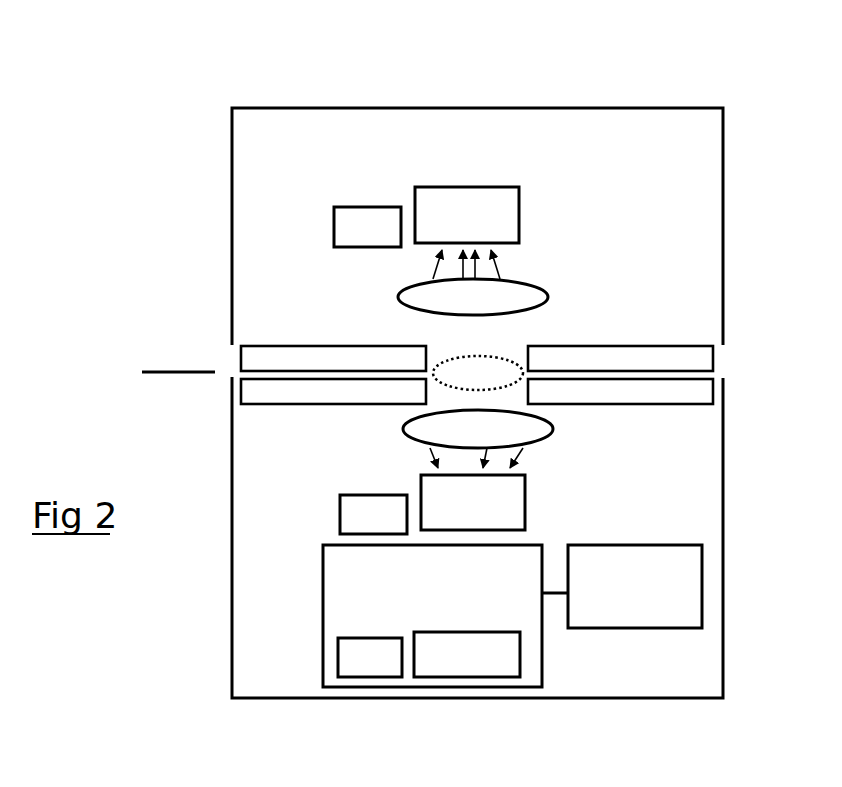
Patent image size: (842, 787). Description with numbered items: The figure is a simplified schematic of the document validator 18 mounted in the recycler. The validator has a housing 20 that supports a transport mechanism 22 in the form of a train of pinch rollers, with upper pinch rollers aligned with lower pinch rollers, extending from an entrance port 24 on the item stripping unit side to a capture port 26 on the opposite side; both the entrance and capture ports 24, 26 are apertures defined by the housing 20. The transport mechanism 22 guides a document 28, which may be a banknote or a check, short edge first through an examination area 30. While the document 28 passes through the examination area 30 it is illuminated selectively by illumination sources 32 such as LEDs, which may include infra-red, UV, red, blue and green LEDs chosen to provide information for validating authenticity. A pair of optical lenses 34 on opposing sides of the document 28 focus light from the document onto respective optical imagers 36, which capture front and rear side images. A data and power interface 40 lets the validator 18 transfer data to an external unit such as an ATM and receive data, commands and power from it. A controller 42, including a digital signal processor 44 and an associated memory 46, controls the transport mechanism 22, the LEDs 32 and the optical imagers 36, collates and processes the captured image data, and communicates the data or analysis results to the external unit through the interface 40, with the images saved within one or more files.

The document validator 18 is at (582, 73).
The housing 20 is at (723, 143).
The transport mechanism 22 is at (268, 332).
The entrance port 24 is at (230, 367).
The capture port 26 is at (728, 367).
The document 28 is at (148, 368).
The examination area 30 is at (498, 357).
The illumination sources 32 is at (334, 214).
The optical lenses 34 is at (523, 280).
The optical imagers 36 is at (507, 187).
The data and power interface 40 is at (702, 582).
The controller 42 is at (323, 585).
The digital signal processor 44 is at (338, 668).
The memory 46 is at (453, 677).